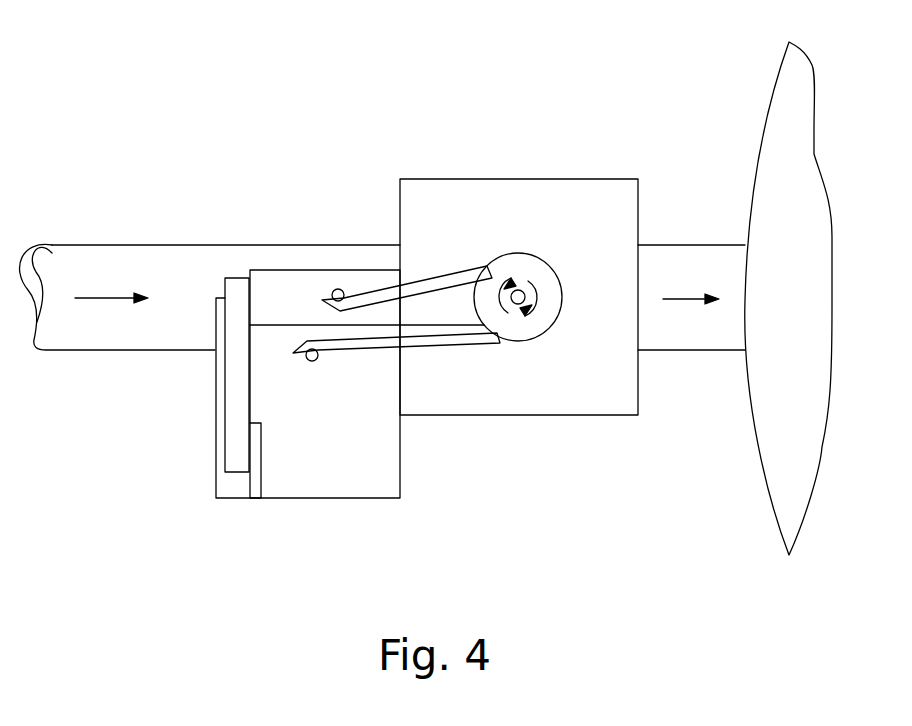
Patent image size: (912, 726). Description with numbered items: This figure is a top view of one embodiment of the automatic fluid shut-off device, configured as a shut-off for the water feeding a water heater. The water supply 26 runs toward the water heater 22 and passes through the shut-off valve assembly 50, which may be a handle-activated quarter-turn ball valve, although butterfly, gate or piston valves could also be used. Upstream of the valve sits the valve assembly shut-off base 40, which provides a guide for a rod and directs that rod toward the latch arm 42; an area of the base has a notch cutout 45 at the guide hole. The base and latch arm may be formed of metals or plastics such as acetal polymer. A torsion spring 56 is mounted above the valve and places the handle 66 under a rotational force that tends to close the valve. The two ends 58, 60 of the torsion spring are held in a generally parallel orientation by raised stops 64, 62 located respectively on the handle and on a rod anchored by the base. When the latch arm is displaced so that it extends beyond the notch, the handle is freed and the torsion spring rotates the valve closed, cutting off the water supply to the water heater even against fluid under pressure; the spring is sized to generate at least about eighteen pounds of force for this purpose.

The water heater 22 is at (773, 152).
The water supply 26 is at (100, 335).
The valve assembly shut-off base 40 is at (280, 485).
The latch arm 42 is at (240, 292).
The notch cutout 45 is at (223, 485).
The shut-off valve assembly 50 is at (630, 206).
The torsion spring 56 is at (513, 267).
The torsion spring end 58 is at (437, 345).
The torsion spring end 60 is at (361, 278).
The raised stop 62 is at (307, 360).
The raised stop 64 is at (336, 289).
The handle 66 is at (272, 312).